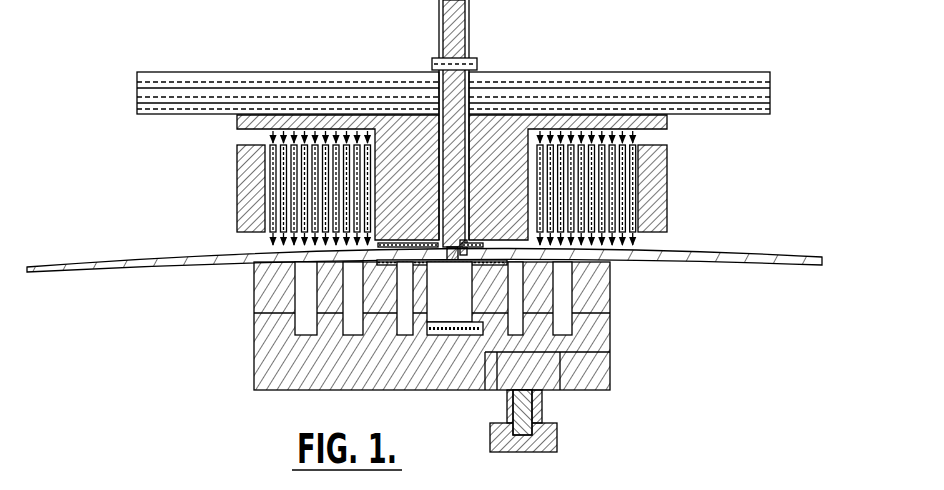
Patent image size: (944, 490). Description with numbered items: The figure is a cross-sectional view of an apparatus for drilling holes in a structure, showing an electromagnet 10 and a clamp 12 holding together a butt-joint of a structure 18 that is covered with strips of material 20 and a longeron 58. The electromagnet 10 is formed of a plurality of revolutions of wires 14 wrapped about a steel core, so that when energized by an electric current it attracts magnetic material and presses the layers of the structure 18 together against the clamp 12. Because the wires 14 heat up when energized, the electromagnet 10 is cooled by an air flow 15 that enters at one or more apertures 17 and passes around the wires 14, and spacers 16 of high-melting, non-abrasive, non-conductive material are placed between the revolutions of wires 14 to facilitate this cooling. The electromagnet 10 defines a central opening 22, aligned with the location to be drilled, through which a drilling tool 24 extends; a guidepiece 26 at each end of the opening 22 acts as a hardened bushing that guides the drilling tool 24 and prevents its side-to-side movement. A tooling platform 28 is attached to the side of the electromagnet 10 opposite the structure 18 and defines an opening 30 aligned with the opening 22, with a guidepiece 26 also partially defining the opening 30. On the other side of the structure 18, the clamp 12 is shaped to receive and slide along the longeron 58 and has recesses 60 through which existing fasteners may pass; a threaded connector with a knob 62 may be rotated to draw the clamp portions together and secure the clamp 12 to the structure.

The electromagnet 10 is at (192, 184).
The clamp 12 is at (612, 330).
The wires 14 is at (635, 196).
The air flow 15 is at (259, 139).
The spacers 16 is at (643, 217).
The apertures 17 is at (238, 143).
The structure 18 is at (158, 258).
The strips of material 20 is at (376, 243).
The opening 22 is at (468, 146).
The drilling tool 24 is at (450, 192).
The guidepiece 26 is at (474, 62).
The tooling platform 28 is at (720, 72).
The opening 30 is at (438, 90).
The longeron 58 is at (433, 337).
The recesses 60 is at (302, 323).
The knob 62 is at (543, 409).